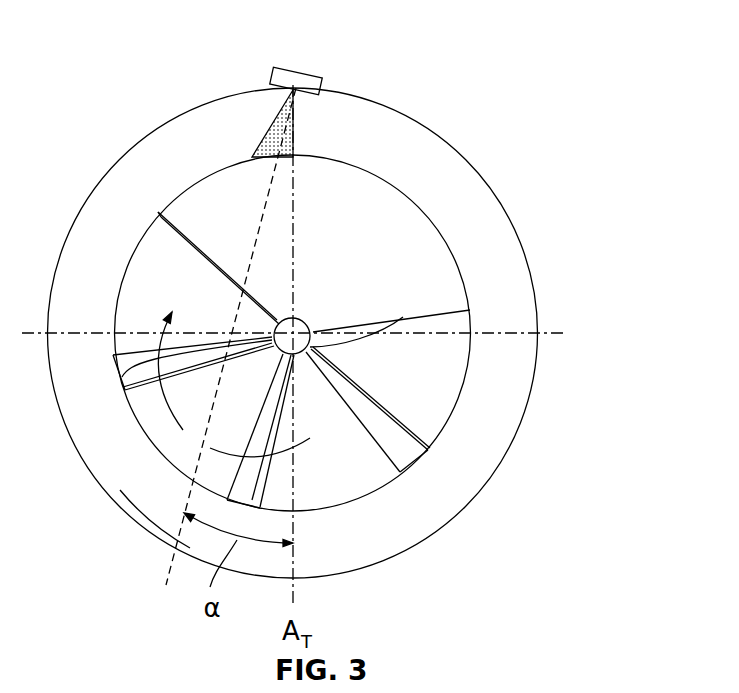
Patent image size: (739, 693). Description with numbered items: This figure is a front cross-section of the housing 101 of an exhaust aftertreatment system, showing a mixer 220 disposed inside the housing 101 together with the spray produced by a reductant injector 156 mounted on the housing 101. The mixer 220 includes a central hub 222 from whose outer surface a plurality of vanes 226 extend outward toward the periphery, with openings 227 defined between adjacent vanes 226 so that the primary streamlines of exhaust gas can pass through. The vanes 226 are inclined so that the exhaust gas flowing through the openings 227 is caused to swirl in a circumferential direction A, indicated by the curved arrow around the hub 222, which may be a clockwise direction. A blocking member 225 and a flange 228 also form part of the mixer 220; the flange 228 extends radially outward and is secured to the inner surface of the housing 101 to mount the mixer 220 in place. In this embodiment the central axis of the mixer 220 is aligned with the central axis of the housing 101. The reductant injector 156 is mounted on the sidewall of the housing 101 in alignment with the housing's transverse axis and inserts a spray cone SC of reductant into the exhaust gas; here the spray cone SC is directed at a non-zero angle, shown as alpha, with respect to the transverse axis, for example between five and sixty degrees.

The housing 101 is at (428, 541).
The reductant injector 156 is at (305, 69).
The mixer 220 is at (435, 162).
The hub 222 is at (403, 317).
The blocking member 225 is at (413, 242).
The vanes 226 is at (435, 415).
The openings 227 is at (430, 450).
The flange 228 is at (138, 505).
The spray cone SC is at (267, 130).
The circumferential direction A is at (122, 377).